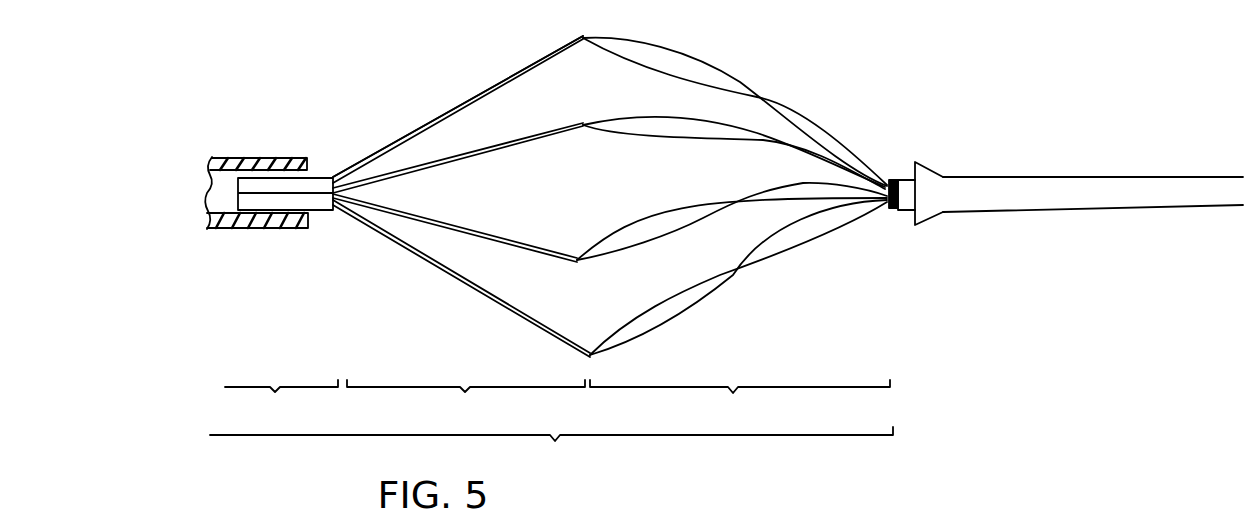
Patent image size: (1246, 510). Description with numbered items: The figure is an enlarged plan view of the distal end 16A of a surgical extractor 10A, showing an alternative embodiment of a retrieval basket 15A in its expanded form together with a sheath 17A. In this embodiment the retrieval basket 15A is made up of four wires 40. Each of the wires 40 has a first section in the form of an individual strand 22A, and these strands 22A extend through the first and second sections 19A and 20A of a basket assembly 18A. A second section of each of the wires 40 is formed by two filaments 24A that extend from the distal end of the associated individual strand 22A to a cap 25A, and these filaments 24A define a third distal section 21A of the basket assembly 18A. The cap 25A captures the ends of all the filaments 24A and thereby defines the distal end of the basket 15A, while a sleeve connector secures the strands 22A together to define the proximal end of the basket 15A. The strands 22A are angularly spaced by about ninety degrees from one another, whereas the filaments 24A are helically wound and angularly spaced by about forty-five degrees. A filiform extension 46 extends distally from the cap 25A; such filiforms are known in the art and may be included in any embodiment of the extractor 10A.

The extractor 10A is at (281, 151).
The retrieval basket 15A is at (610, 194).
The distal end 16A is at (290, 229).
The sheath 17A is at (301, 161).
The basket assembly 18A is at (551, 449).
The first section 19A is at (281, 403).
The second section 20A is at (466, 404).
The third distal section 21A is at (740, 402).
The individual strand 22A is at (502, 81).
The filaments 24A is at (714, 70).
The cap 25A is at (938, 213).
The wires 40 is at (447, 158).
The filiform extension 46 is at (1108, 176).